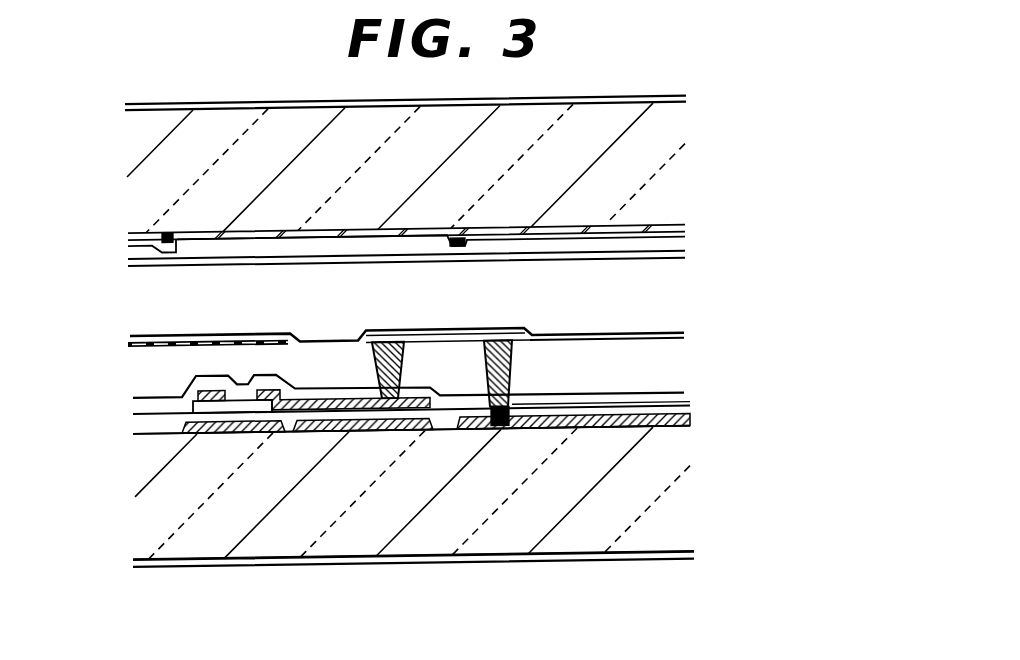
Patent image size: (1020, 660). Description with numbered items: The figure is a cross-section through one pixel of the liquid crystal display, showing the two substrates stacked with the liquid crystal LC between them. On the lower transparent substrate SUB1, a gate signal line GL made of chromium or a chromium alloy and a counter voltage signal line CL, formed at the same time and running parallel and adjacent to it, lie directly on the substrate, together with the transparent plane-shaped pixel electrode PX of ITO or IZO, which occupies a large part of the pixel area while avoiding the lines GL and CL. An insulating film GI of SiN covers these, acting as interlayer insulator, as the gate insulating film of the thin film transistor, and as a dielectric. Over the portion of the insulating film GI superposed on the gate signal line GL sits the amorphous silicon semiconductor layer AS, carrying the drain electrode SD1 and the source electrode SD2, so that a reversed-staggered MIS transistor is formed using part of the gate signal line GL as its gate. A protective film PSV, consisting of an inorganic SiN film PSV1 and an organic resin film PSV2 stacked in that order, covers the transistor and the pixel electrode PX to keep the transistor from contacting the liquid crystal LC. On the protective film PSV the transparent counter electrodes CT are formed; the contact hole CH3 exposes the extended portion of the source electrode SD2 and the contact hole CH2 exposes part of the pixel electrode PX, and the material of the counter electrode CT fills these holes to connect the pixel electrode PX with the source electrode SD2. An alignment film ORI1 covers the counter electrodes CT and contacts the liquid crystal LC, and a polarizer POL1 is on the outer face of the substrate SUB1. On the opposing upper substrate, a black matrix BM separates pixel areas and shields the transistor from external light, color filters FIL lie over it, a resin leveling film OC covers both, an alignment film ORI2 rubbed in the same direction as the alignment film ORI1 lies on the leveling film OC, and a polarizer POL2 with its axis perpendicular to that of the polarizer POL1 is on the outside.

The polarizer POL2 is at (688, 99).
The color filter FIL is at (684, 228).
The leveling film OC is at (684, 244).
The black matrix BM is at (162, 235).
The alignment film ORI2 is at (688, 259).
The liquid crystal LC is at (662, 302).
The alignment film ORI1 is at (683, 334).
The counter electrode CT is at (130, 345).
The protective film PSV is at (490, 369).
The organic film PSV2 is at (670, 367).
The inorganic film PSV1 is at (683, 393).
The contact hole CH3 is at (396, 405).
The contact hole CH2 is at (497, 430).
The semiconductor layer AS is at (193, 406).
The drain electrode SD1 is at (197, 393).
The source electrode SD2 is at (268, 392).
The insulating film GI is at (137, 426).
The gate signal line GL is at (225, 434).
The counter voltage signal line CL is at (338, 433).
The pixel electrode PX is at (571, 434).
The transparent substrate SUB1 is at (142, 525).
The polarizer POL1 is at (694, 553).